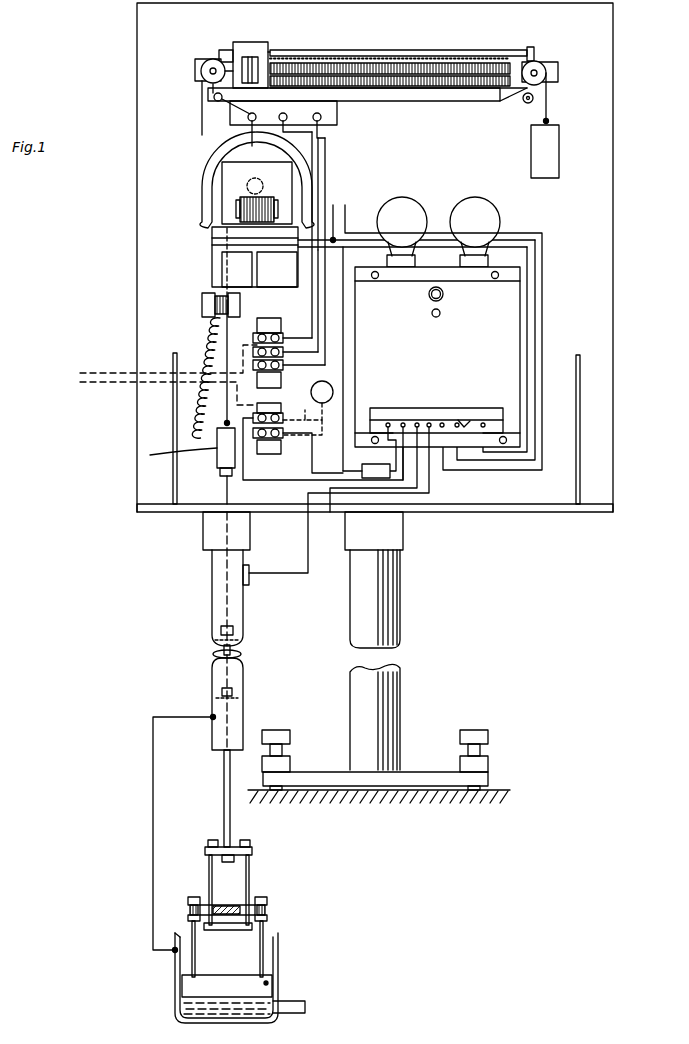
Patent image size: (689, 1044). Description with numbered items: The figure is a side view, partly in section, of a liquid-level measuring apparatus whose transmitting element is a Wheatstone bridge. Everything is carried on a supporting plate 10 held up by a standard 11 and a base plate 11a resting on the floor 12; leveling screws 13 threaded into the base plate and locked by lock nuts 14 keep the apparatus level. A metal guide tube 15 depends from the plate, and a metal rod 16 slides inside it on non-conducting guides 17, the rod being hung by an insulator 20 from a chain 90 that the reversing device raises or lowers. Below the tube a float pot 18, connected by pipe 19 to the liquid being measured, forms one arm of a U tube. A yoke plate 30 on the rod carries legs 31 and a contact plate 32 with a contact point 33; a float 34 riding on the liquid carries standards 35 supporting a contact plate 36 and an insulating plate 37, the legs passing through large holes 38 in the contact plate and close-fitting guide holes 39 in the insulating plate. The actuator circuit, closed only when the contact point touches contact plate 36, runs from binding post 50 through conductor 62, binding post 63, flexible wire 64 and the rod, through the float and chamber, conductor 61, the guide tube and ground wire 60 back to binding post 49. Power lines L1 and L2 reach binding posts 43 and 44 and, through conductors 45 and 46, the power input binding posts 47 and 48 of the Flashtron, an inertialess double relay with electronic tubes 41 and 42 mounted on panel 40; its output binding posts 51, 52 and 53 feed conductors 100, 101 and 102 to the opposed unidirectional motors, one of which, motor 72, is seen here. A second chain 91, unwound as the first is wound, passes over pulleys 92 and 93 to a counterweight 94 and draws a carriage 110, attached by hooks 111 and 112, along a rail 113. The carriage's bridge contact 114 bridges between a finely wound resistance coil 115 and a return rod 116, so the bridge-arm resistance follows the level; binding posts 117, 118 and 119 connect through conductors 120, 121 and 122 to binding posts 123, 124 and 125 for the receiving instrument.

The supporting plate 10 is at (613, 272).
The standard 11 is at (396, 622).
The base plate 11a is at (415, 783).
The floor 12 is at (492, 797).
The leveling screws 13 is at (484, 742).
The lock nuts 14 is at (489, 765).
The guide tube 15 is at (246, 621).
The metal rod 16 is at (240, 655).
The non-conducting guides 17 is at (244, 700).
The float pot 18 is at (280, 962).
The pipe 19 is at (300, 1006).
The insulator 20 is at (187, 402).
The yoke plate 30 is at (233, 848).
The legs 31 is at (250, 862).
The contact plate 32 is at (258, 918).
The contact point 33 is at (222, 932).
The float 34 is at (268, 983).
The standards 35 is at (276, 945).
The contact plate 36 is at (202, 927).
The insulating plate 37 is at (228, 904).
The holes 38 is at (230, 931).
The guide holes 39 is at (188, 908).
The control panel 40 is at (520, 335).
The electronic tube 41 is at (404, 197).
The electronic tube 42 is at (477, 197).
The binding post 43 is at (268, 416).
The binding post 44 is at (272, 452).
The conductor 45 is at (307, 470).
The conductor 46 is at (325, 525).
The power input binding post 47 is at (403, 419).
The power input binding post 48 is at (388, 419).
The actuator circuit binding post 49 is at (417, 419).
The actuator circuit binding post 50 is at (429, 419).
The binding post 51 is at (442, 419).
The binding post 52 is at (460, 418).
The binding post 53 is at (484, 419).
The ground wire 60 is at (407, 494).
The conductor 61 is at (153, 790).
The conductor 62 is at (420, 482).
The binding post 63 is at (202, 305).
The flexible wire 64 is at (200, 350).
The unidirectional motor 72 is at (238, 204).
The chain 90 is at (220, 258).
The second chain 91 is at (200, 143).
The pulley 92 is at (208, 62).
The pulley 93 is at (560, 70).
The counterweight 94 is at (560, 154).
The conductor 100 is at (535, 472).
The conductor 101 is at (528, 452).
The conductor 102 is at (543, 302).
The carriage 110 is at (245, 42).
The hook 111 is at (230, 50).
The hook 112 is at (275, 52).
The rail 113 is at (406, 86).
The bridge contact 114 is at (232, 80).
The resistance coil 115 is at (353, 58).
The return rod 116 is at (362, 66).
The binding post 117 is at (248, 117).
The binding post 118 is at (278, 113).
The binding post 119 is at (316, 113).
The conductor 120 is at (314, 149).
The conductor 121 is at (320, 158).
The conductor 122 is at (326, 172).
The binding post 123 is at (283, 331).
The binding post 124 is at (283, 338).
The binding post 125 is at (283, 352).
The power line L1 is at (308, 400).
The power line L2 is at (302, 439).